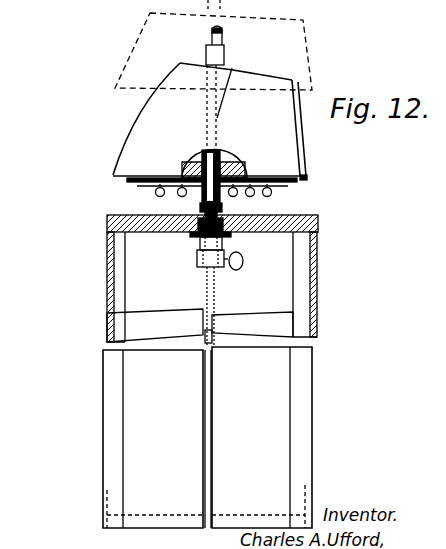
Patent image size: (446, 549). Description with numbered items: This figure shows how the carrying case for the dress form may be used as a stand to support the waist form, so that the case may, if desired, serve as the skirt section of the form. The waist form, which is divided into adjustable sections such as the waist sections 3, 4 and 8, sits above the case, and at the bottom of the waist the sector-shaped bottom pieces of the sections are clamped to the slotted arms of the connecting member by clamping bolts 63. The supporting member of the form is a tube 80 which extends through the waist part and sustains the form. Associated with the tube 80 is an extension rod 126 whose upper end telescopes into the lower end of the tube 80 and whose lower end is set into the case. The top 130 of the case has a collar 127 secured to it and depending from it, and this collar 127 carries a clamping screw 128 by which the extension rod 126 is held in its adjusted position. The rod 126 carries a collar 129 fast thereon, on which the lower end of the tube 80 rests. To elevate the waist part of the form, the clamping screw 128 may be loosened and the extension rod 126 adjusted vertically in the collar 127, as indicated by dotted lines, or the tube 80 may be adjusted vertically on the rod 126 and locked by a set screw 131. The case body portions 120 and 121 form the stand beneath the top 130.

The waist section 3 is at (280, 139).
The waist section 4 is at (307, 156).
The waist section 8 is at (117, 153).
The clamping bolts 63 is at (168, 198).
The tube 80 is at (218, 56).
The lower body left section 120 is at (143, 425).
The lower body right section 121 is at (272, 438).
The extension rod 126 is at (213, 293).
The collar 127 is at (215, 240).
The clamping screw 128 is at (243, 261).
The collar 129 is at (287, 220).
The top of the case 130 is at (140, 215).
The set screw 131 is at (230, 202).